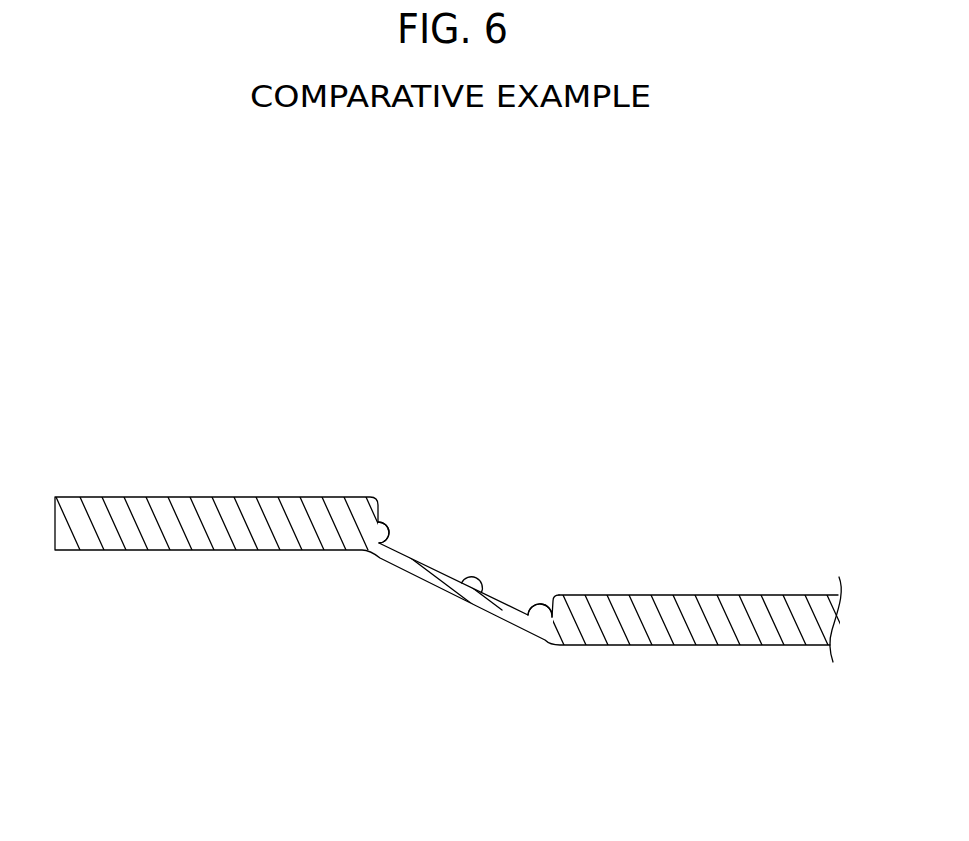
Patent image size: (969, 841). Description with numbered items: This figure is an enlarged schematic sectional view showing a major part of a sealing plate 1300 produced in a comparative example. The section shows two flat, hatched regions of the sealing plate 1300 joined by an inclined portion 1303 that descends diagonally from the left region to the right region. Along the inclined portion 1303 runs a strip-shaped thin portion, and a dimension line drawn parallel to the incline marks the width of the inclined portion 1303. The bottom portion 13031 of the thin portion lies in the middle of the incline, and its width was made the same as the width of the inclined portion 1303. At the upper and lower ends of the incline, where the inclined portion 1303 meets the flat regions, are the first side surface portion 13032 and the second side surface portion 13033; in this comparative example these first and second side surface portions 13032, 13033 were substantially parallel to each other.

The sealing plate 1300 is at (499, 223).
The inclined portion 1303 is at (567, 596).
The bottom portion 13031 is at (468, 588).
The first side surface portion 13032 is at (390, 527).
The second side surface portion 13033 is at (531, 630).